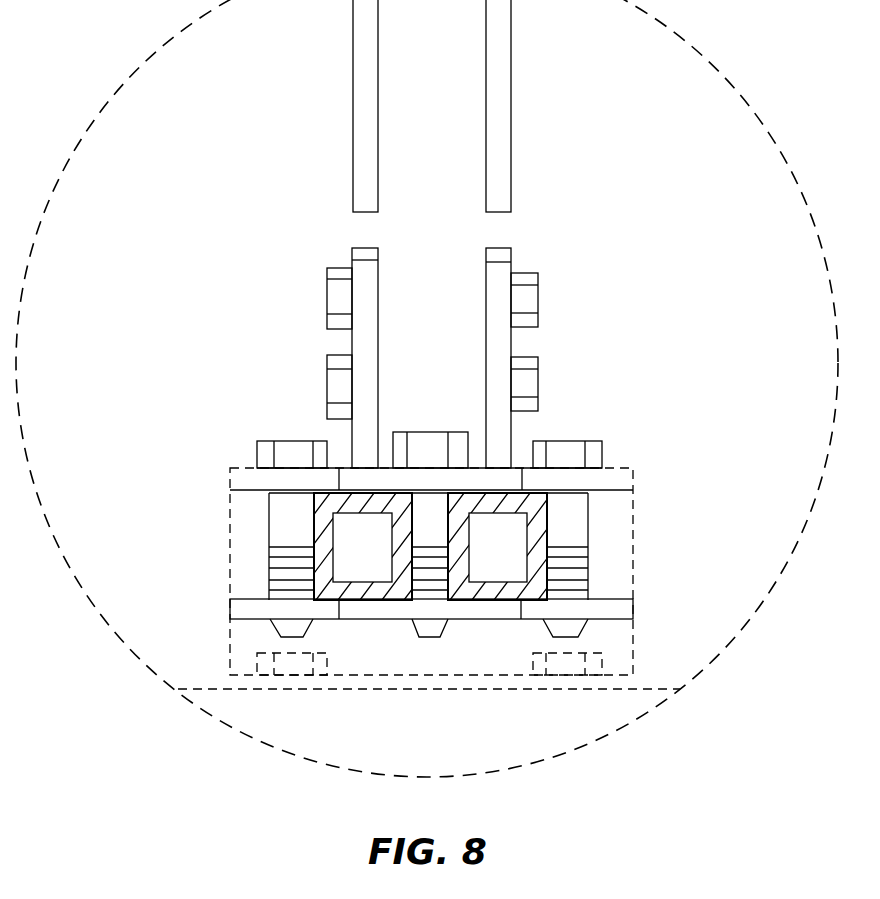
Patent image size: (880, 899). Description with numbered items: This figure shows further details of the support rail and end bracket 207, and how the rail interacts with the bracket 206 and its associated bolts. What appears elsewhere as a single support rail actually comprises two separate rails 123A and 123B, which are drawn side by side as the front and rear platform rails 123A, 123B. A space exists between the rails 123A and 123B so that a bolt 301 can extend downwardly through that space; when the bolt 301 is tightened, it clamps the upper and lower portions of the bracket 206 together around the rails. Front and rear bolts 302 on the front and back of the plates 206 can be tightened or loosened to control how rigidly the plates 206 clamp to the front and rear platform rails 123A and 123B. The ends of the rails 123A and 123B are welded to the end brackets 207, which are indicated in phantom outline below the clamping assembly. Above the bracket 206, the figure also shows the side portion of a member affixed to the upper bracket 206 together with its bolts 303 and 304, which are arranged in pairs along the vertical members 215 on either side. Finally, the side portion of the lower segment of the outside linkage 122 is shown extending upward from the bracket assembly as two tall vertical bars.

The outside linkage 122 is at (353, 70).
The lower bar sections 215 is at (363, 280).
The bolt 304 is at (327, 297).
The bolt 303 is at (327, 377).
The front and rear bolts 302 is at (290, 441).
The bolt 301 is at (430, 432).
The bracket 206 is at (612, 479).
The end bracket 207 is at (230, 550).
The platform rail 123A is at (343, 528).
The platform rail 123B is at (510, 540).